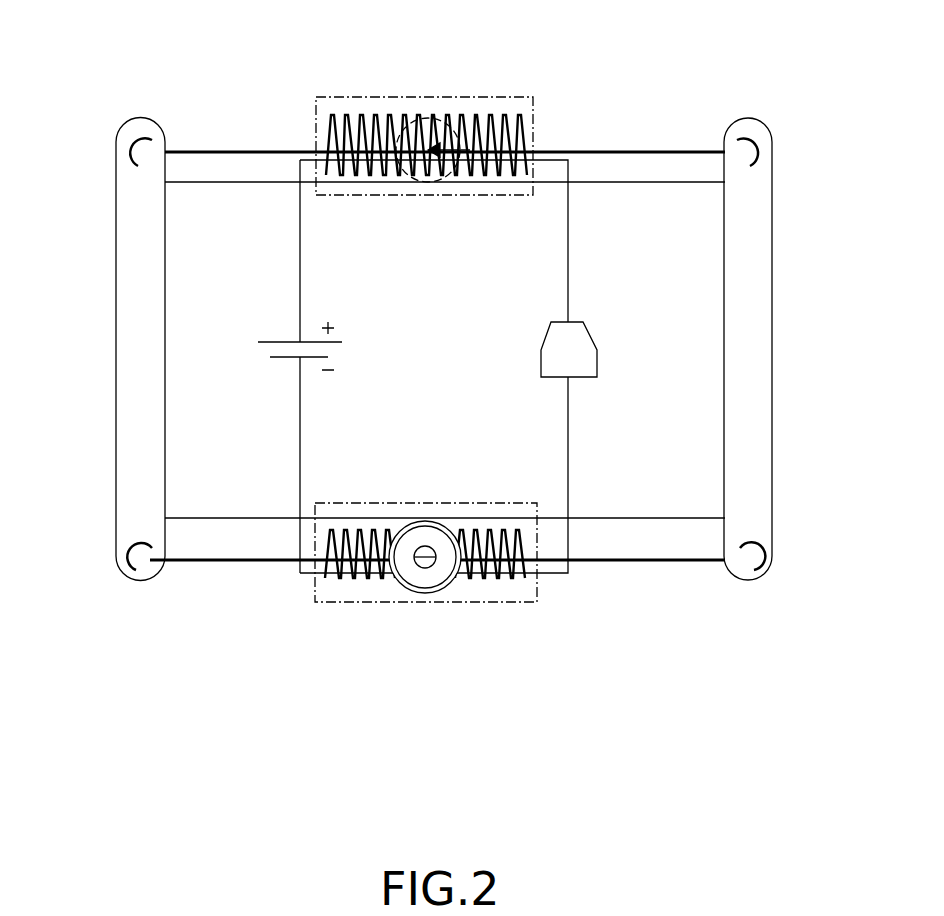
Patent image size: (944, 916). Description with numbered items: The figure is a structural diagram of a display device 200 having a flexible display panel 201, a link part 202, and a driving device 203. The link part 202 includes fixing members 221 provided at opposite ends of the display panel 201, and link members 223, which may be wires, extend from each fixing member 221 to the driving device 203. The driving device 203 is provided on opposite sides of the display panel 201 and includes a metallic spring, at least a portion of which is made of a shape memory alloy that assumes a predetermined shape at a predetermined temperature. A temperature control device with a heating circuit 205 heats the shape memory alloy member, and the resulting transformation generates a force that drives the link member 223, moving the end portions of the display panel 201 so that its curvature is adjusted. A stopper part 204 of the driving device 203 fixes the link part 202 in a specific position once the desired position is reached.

The display device 200 is at (721, 61).
The display panel 201 is at (250, 508).
The link part 202 is at (193, 652).
The driving device 203 is at (384, 97).
The stopper part 204 is at (440, 108).
The heating circuit 205 is at (300, 320).
The fixing member 221 is at (128, 582).
The link member 223 is at (184, 566).